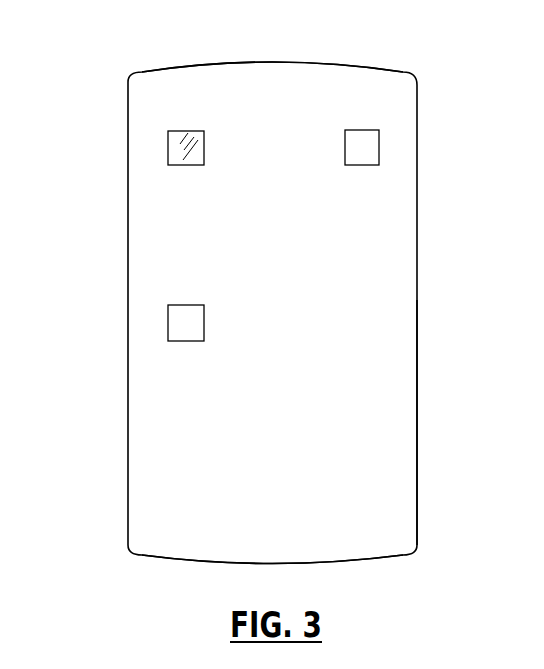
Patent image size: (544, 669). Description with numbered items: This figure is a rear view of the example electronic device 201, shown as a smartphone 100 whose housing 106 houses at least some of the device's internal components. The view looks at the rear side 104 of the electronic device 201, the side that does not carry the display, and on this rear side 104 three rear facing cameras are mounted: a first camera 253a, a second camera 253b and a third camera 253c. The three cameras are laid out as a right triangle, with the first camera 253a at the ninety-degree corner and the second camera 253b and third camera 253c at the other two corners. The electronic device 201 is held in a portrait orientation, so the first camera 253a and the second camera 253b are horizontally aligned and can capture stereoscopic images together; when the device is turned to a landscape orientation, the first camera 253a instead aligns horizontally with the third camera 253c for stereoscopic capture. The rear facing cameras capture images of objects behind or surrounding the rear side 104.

The smartphone 100 is at (423, 70).
The electronic device 201 is at (332, 60).
The housing 106 is at (418, 395).
The rear side 104 is at (378, 485).
The first camera 253a is at (176, 151).
The second camera 253b is at (370, 155).
The third camera 253c is at (173, 312).